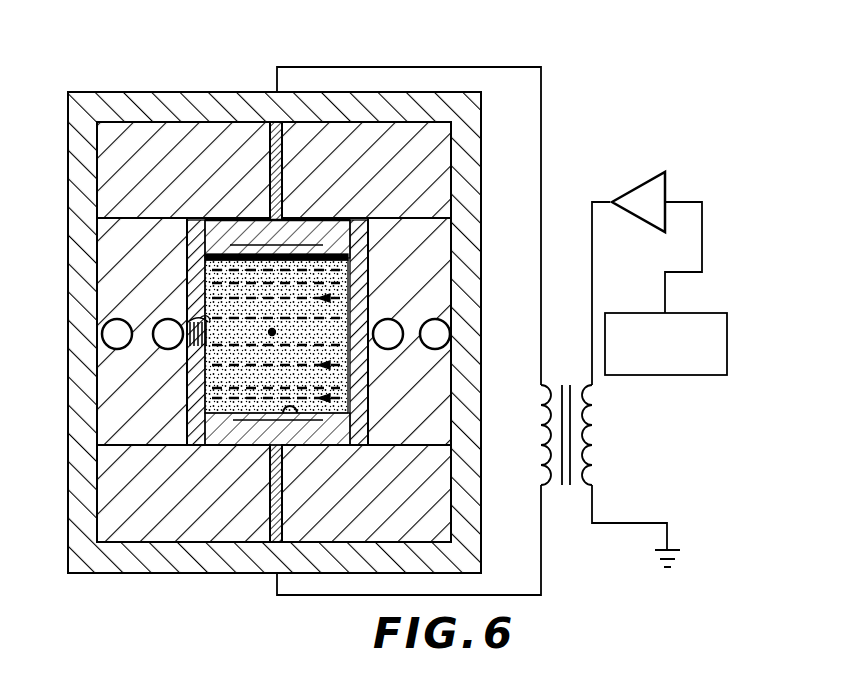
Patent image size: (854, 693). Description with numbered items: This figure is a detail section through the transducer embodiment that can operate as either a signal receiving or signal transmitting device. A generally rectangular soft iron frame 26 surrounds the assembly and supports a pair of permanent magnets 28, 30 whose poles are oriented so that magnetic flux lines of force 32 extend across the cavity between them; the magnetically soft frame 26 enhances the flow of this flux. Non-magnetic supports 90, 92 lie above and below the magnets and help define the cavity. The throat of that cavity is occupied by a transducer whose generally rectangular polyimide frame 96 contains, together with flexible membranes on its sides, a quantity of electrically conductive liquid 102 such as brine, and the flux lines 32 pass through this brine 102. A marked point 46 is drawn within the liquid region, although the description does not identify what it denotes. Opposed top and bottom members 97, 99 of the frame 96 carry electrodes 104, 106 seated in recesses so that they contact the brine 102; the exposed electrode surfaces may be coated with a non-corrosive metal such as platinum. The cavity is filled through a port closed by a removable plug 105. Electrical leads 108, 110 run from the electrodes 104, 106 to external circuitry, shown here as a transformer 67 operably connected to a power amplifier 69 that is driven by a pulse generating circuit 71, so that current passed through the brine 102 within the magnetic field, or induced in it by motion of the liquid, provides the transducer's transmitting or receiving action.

The soft iron frame 26 is at (68, 431).
The permanent magnet 28 is at (110, 264).
The permanent magnet 30 is at (438, 252).
The magnetic flux lines of force 32 is at (360, 297).
The magnetic particle chamber 46 is at (272, 333).
The transformer 67 is at (565, 488).
The power amplifier 69 is at (641, 188).
The pulse generating circuit 71 is at (665, 376).
The support 90 is at (310, 130).
The support 92 is at (367, 530).
The frame 96 is at (244, 442).
The top member 97 is at (244, 232).
The bottom member 99 is at (240, 452).
The electrically conductive liquid 102 is at (232, 286).
The electrode 104 is at (363, 222).
The removable plug 105 is at (200, 318).
The electrode 106 is at (290, 445).
The electrical lead 108 is at (377, 67).
The electrical lead 110 is at (277, 586).